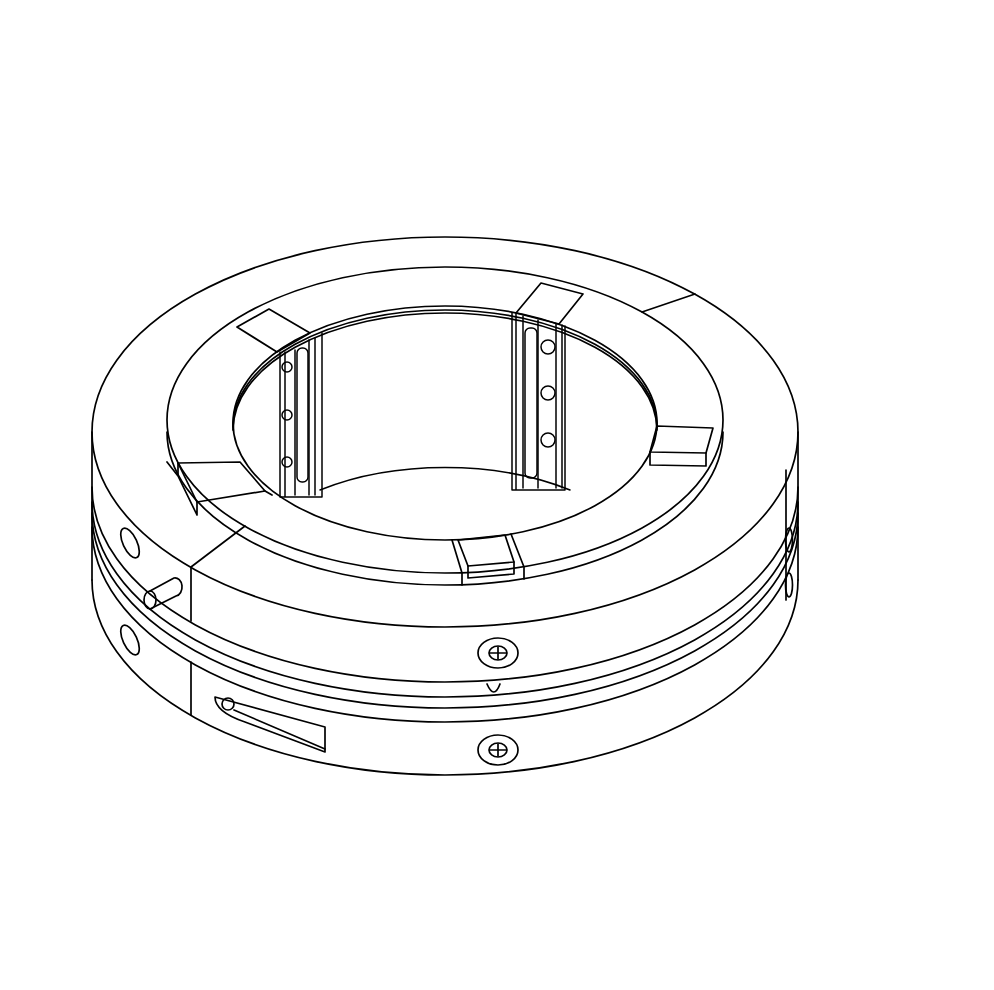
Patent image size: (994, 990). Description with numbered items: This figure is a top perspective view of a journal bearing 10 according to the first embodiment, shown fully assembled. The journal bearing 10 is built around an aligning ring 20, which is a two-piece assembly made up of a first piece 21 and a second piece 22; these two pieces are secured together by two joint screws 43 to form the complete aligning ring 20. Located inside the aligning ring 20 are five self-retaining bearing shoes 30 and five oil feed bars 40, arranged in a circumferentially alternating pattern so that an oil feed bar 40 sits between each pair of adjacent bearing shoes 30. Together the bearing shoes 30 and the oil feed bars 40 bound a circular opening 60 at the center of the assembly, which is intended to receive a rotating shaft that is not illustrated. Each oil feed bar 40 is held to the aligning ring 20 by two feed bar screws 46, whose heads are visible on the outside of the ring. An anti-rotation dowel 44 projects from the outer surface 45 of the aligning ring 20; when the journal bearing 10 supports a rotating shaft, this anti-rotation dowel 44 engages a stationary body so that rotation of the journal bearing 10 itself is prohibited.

The journal bearing 10 is at (766, 127).
The aligning ring 20 is at (804, 518).
The first piece 21 is at (650, 292).
The second piece 22 is at (702, 318).
The self-retaining shoe 30 is at (418, 270).
The oil feed bar 40 is at (290, 326).
The joint screw 43 is at (229, 713).
The anti-rotation dowel 44 is at (143, 597).
The outer surface 45 is at (403, 663).
The feed bar screw 46 is at (500, 760).
The circular opening 60 is at (427, 398).